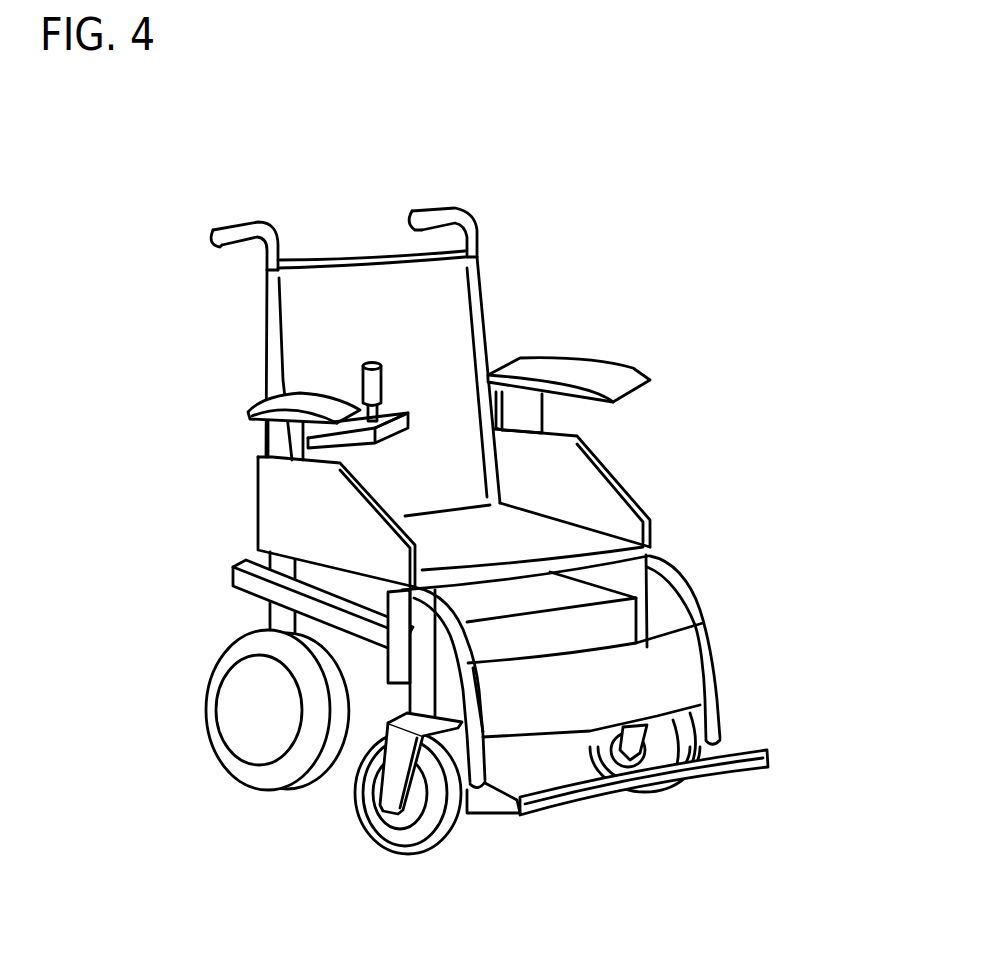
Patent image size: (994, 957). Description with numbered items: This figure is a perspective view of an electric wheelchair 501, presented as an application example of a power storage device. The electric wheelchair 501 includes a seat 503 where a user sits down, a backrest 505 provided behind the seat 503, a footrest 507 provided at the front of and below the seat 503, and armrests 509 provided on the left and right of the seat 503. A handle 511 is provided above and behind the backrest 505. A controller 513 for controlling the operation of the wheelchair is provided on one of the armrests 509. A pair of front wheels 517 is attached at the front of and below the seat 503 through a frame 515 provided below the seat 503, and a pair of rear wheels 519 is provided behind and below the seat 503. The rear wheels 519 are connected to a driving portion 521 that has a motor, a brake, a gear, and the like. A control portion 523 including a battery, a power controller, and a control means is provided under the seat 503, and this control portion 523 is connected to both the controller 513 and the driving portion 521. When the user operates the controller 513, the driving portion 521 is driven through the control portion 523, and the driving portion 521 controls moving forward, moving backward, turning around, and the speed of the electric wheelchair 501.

The electric wheelchair 501 is at (612, 217).
The seat 503 is at (565, 543).
The backrest 505 is at (430, 361).
The footrest 507 is at (577, 787).
The armrests 509 is at (605, 380).
The handle 511 is at (445, 216).
The controller 513 is at (370, 387).
The frame 515 is at (653, 612).
The front wheels 517 is at (408, 820).
The rear wheels 519 is at (257, 740).
The driving portion 521 is at (373, 706).
The control portion 523 is at (620, 632).